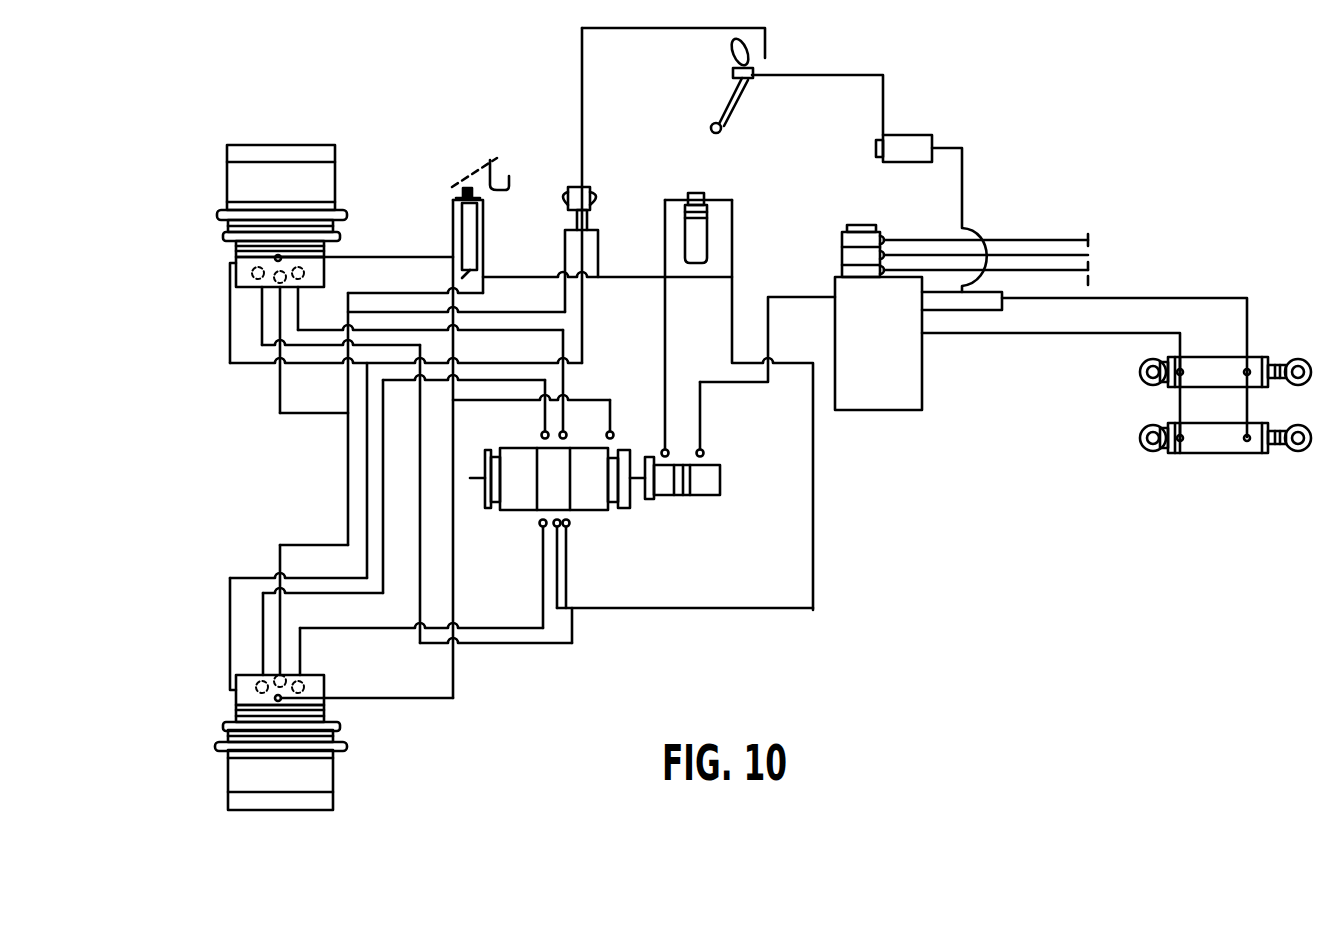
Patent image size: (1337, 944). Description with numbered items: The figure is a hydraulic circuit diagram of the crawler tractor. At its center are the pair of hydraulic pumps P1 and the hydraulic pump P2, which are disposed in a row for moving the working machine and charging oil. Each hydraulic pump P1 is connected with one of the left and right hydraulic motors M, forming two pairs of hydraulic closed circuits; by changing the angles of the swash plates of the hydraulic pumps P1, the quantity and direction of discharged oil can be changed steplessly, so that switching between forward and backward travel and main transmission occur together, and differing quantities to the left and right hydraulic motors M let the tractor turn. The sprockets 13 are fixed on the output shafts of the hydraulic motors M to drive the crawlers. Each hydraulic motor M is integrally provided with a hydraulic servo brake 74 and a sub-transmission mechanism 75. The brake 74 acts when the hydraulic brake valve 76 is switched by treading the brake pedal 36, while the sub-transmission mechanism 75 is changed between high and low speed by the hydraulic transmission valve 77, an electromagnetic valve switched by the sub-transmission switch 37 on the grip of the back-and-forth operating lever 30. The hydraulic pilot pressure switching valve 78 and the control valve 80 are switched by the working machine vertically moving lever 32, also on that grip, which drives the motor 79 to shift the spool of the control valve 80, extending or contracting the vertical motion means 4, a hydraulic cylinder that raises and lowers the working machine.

The hydraulic motor M is at (228, 178).
The sprocket 13 is at (226, 218).
The hydraulic servo brake 74 is at (226, 233).
The sub-transmission mechanism 75 is at (230, 263).
The hydraulic brake valve 76 is at (455, 198).
The brake pedal 36 is at (507, 187).
The hydraulic transmission valve 77 is at (602, 200).
The hydraulic pilot pressure switching valve 78 is at (700, 187).
The back-and-forth operating lever 30 is at (737, 98).
The working machine vertically moving lever 32 is at (730, 62).
The sub-transmission switch 37 is at (760, 65).
The motor 79 is at (915, 133).
The control valve 80 is at (875, 410).
The vertical motion means 4 is at (1212, 435).
The hydraulic pump P1 is at (520, 500).
The hydraulic pump P2 is at (667, 497).